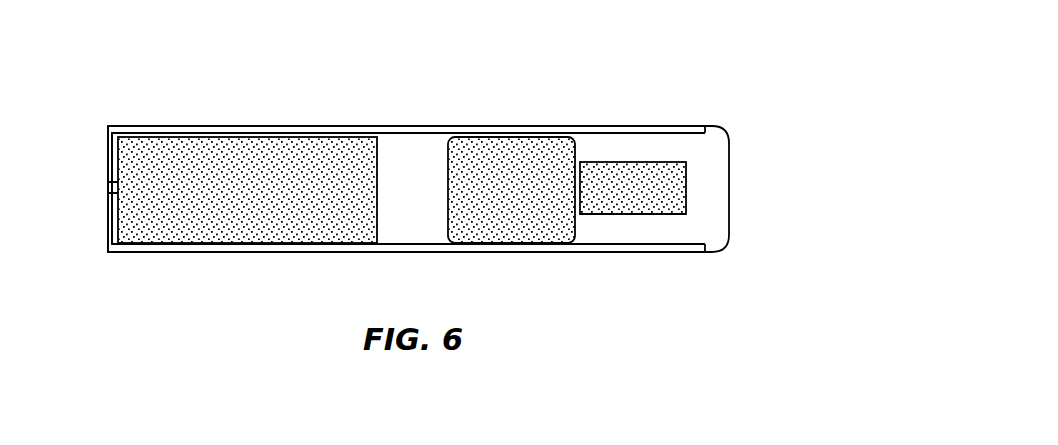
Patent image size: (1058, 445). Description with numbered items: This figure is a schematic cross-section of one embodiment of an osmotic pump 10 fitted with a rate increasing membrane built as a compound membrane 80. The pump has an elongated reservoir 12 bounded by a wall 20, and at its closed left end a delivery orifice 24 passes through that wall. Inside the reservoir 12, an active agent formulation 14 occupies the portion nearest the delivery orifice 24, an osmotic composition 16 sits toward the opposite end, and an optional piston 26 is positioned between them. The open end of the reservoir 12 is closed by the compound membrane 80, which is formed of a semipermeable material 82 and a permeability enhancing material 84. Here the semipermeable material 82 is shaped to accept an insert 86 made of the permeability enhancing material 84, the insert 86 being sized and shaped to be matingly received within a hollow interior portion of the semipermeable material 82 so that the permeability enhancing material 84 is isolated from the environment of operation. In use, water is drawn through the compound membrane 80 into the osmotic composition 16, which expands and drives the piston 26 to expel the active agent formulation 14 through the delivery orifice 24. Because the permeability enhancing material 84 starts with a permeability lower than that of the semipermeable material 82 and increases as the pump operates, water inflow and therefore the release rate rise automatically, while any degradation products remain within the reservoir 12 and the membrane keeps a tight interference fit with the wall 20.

The osmotic pump 10 is at (656, 93).
The reservoir 12 is at (233, 130).
The active agent formulation 14 is at (205, 225).
The osmotic composition 16 is at (517, 152).
The wall 20 is at (110, 231).
The delivery orifice 24 is at (110, 183).
The piston 26 is at (403, 230).
The compound membrane 80 is at (727, 133).
The semipermeable material 82 is at (717, 227).
The permeability enhancing material 84 is at (663, 188).
The insert 86 is at (630, 215).